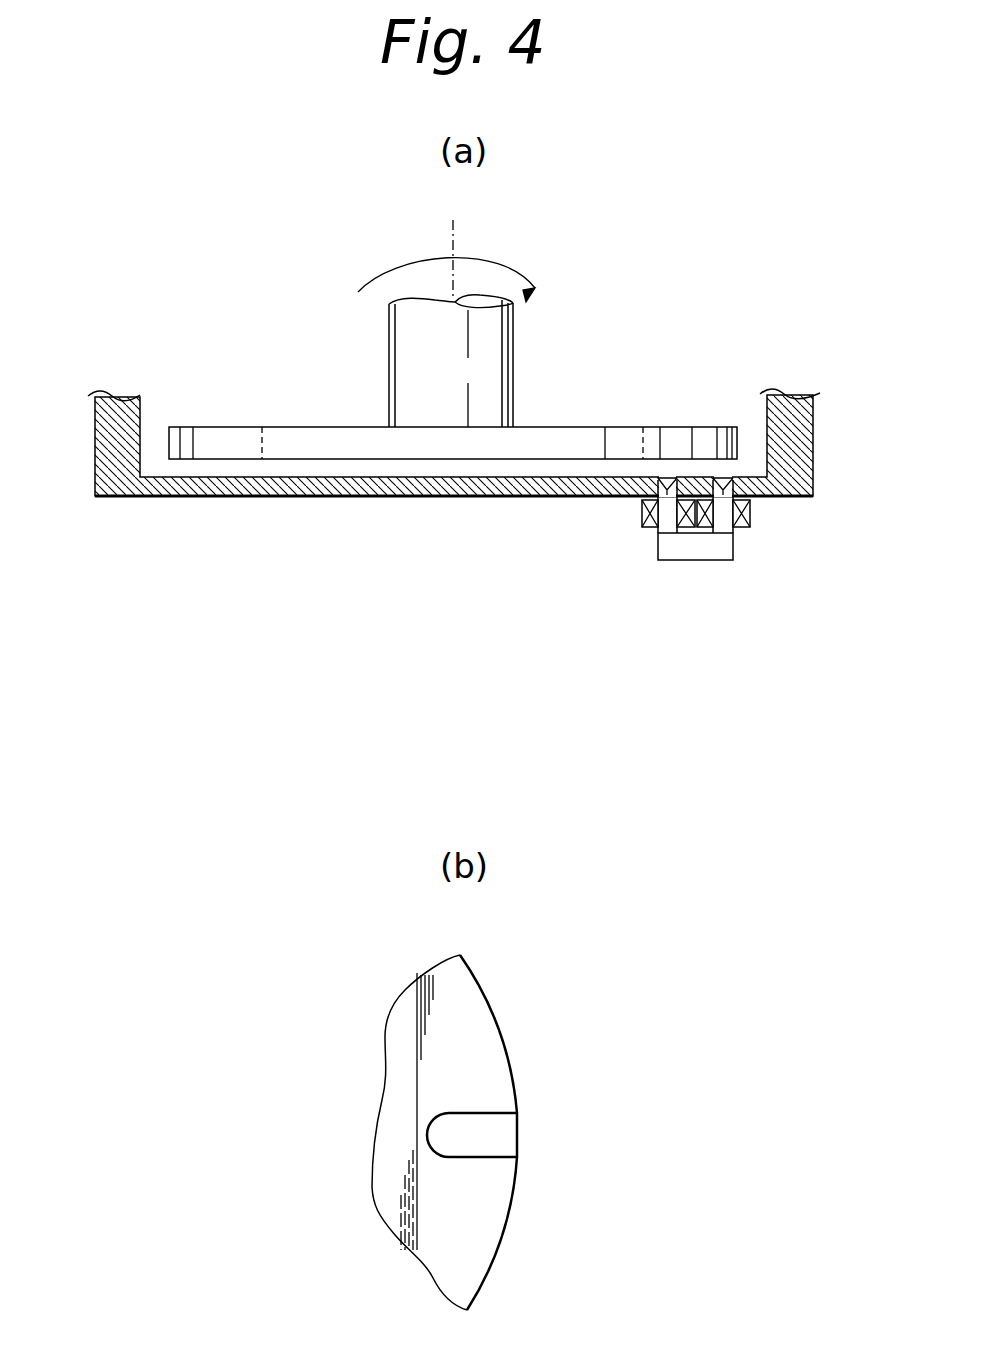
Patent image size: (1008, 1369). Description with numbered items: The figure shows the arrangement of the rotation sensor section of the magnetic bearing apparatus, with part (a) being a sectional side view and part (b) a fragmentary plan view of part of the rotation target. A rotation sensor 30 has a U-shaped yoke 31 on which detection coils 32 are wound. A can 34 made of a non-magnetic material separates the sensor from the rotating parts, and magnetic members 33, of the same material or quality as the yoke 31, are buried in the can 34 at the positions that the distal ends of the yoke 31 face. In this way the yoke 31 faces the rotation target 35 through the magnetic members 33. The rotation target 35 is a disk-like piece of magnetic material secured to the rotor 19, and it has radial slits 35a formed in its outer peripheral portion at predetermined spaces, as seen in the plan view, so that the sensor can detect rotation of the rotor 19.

The rotor 19 is at (407, 355).
The rotation sensor 30 is at (713, 541).
The U-shaped yoke 31 is at (727, 550).
The detection coils 32 is at (643, 527).
The magnetic members 33 is at (658, 492).
The can 34 is at (380, 497).
The rotation target 35 is at (570, 427).
The radial slits 35a is at (497, 1133).